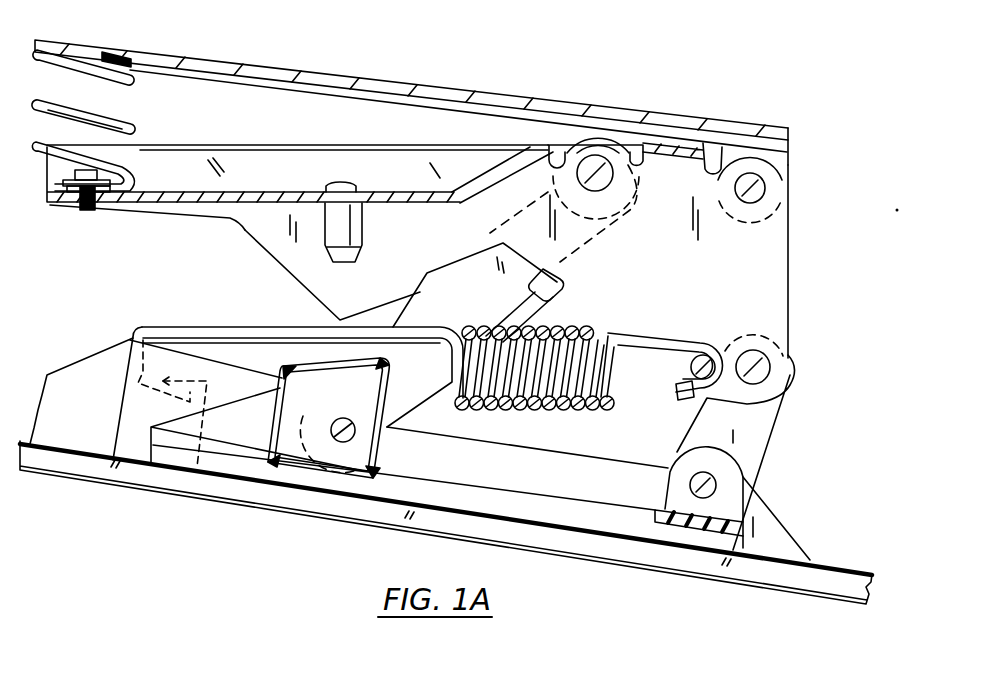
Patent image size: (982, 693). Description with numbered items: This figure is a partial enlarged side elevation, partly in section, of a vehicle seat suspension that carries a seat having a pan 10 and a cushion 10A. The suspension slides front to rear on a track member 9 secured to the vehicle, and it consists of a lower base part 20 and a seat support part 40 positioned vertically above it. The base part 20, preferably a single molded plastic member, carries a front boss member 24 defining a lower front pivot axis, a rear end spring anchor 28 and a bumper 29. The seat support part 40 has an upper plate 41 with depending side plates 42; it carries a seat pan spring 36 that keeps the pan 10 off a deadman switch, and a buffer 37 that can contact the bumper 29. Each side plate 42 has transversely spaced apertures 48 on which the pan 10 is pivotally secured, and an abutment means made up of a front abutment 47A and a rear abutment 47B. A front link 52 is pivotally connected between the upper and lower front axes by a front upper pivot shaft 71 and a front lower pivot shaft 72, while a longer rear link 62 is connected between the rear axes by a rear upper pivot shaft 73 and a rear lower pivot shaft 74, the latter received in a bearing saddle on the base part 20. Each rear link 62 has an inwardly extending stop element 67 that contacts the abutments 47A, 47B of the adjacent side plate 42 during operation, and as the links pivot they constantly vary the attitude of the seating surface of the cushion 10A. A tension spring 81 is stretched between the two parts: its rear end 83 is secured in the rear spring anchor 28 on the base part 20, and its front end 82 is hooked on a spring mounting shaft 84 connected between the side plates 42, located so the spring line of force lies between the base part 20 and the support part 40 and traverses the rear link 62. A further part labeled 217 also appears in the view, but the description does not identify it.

The pan 10 is at (303, 66).
The cushion 10A is at (792, 154).
The seat pan spring 36 is at (137, 129).
The seat support part 40 is at (250, 144).
The upper plate 41 is at (341, 144).
The buffer 37 is at (362, 226).
The rear upper pivot shaft 73 is at (610, 180).
The apertures 48 is at (766, 190).
The side plates 42 is at (678, 267).
The rear abutment 47B is at (393, 307).
The rear link 62 is at (474, 301).
The stop element 67 is at (528, 300).
The front abutment 47A is at (532, 304).
The tension spring 81 is at (592, 327).
The front end 82 is at (700, 343).
The spring mounting shaft 84 is at (690, 366).
The front upper pivot shaft 71 is at (764, 370).
The front link 52 is at (788, 410).
The front boss member 24 is at (732, 464).
The front lower pivot shaft 72 is at (716, 485).
The base part 20 is at (800, 528).
The track member 9 is at (852, 594).
The rear end 83 is at (145, 330).
The bumper 29 is at (293, 363).
The rear end spring anchor 28 is at (133, 380).
The rear lower pivot shaft 74 is at (330, 429).
The base plate 217 is at (409, 449).